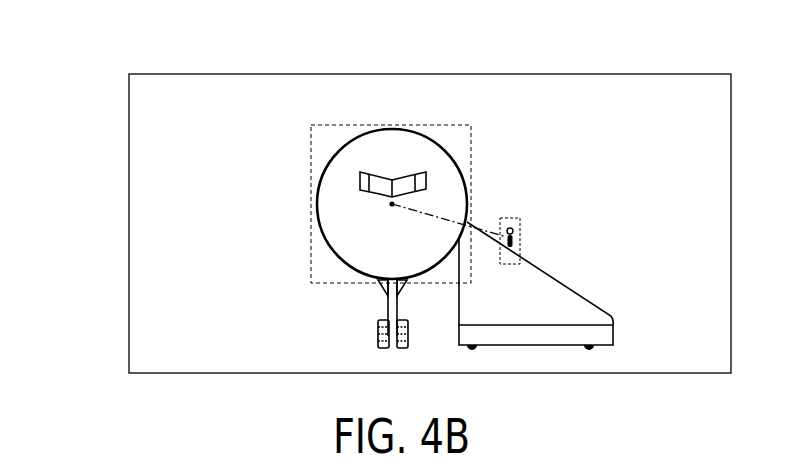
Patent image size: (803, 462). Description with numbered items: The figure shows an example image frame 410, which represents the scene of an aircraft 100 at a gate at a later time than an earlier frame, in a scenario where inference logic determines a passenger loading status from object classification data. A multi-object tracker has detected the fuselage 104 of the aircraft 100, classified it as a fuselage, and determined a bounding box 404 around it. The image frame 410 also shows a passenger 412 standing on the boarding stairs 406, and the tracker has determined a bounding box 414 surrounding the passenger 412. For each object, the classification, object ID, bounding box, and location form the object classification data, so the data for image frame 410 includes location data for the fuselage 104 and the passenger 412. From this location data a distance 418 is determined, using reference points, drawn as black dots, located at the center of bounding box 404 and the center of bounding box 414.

The image frame 410 is at (124, 204).
The aircraft 100 is at (322, 309).
The fuselage 104 is at (336, 158).
The distance 418 is at (408, 214).
The bounding box 404 is at (333, 124).
The boarding stairs 406 is at (613, 320).
The bounding box 414 is at (512, 218).
The passenger 412 is at (524, 233).